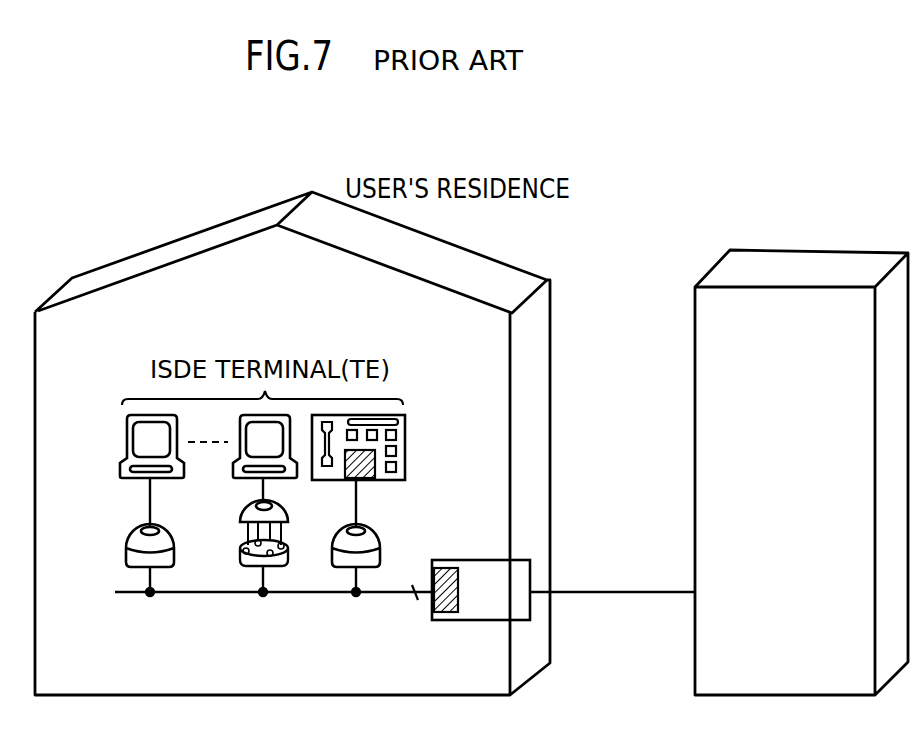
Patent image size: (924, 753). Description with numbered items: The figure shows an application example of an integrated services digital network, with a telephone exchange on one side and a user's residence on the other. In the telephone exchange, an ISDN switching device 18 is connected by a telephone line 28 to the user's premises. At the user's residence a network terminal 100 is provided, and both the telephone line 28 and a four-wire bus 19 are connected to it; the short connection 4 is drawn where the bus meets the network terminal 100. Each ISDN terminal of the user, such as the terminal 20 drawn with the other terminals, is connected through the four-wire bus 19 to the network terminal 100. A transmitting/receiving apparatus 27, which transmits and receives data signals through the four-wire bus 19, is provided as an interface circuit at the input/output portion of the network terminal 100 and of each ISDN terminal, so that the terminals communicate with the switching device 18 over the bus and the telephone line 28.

The ISDN switching device 18 is at (832, 262).
The four-wire bus 19 is at (135, 595).
The ISDN terminal (telephone) 20 is at (406, 452).
The transmitting/receiving apparatus 27 is at (368, 480).
The telephone line 28 is at (600, 592).
The network terminal (NT) 100 is at (478, 560).
The line 4 is at (410, 609).